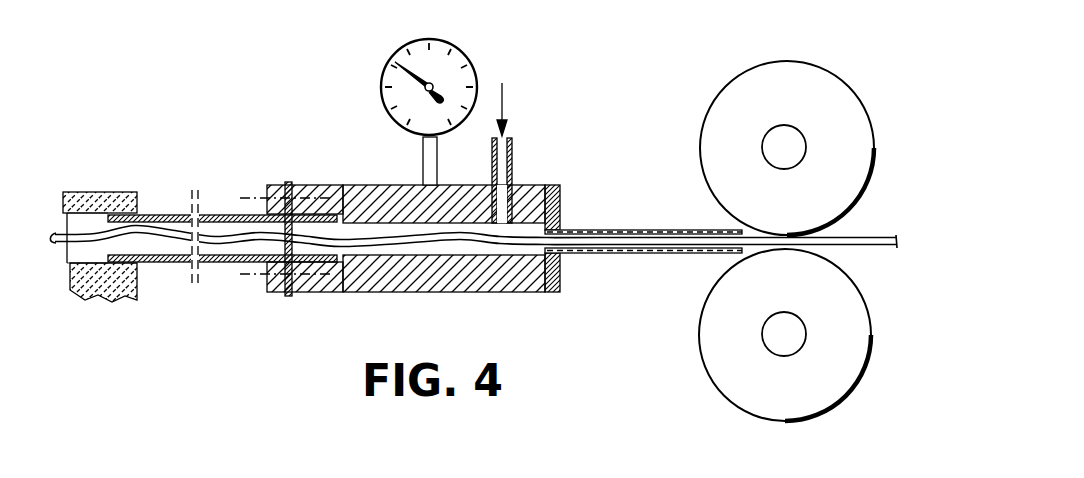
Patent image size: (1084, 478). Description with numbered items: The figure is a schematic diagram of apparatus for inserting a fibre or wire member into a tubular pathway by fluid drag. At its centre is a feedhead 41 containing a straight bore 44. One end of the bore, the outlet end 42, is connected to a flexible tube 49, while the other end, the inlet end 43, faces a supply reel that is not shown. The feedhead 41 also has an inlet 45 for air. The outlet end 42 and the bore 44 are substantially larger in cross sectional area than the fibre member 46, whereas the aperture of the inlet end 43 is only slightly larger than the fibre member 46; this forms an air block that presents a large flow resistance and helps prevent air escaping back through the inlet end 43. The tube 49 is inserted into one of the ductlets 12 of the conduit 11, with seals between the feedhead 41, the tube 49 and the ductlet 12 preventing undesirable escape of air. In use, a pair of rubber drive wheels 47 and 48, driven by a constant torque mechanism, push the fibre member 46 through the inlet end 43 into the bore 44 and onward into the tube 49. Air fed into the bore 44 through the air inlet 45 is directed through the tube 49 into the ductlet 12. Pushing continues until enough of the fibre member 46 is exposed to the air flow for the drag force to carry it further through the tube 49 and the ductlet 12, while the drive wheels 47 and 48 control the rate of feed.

The conduit 11 is at (92, 191).
The ductlet 12 is at (84, 250).
The feedhead 41 is at (398, 219).
The outlet end 42 is at (267, 185).
The inlet end 43 is at (548, 232).
The straight bore 44 is at (369, 228).
The air inlet 45 is at (504, 153).
The fibre member 46 is at (497, 240).
The rubber drive wheel 47 is at (727, 358).
The rubber drive wheel 48 is at (728, 123).
The flexible tube 49 is at (210, 215).